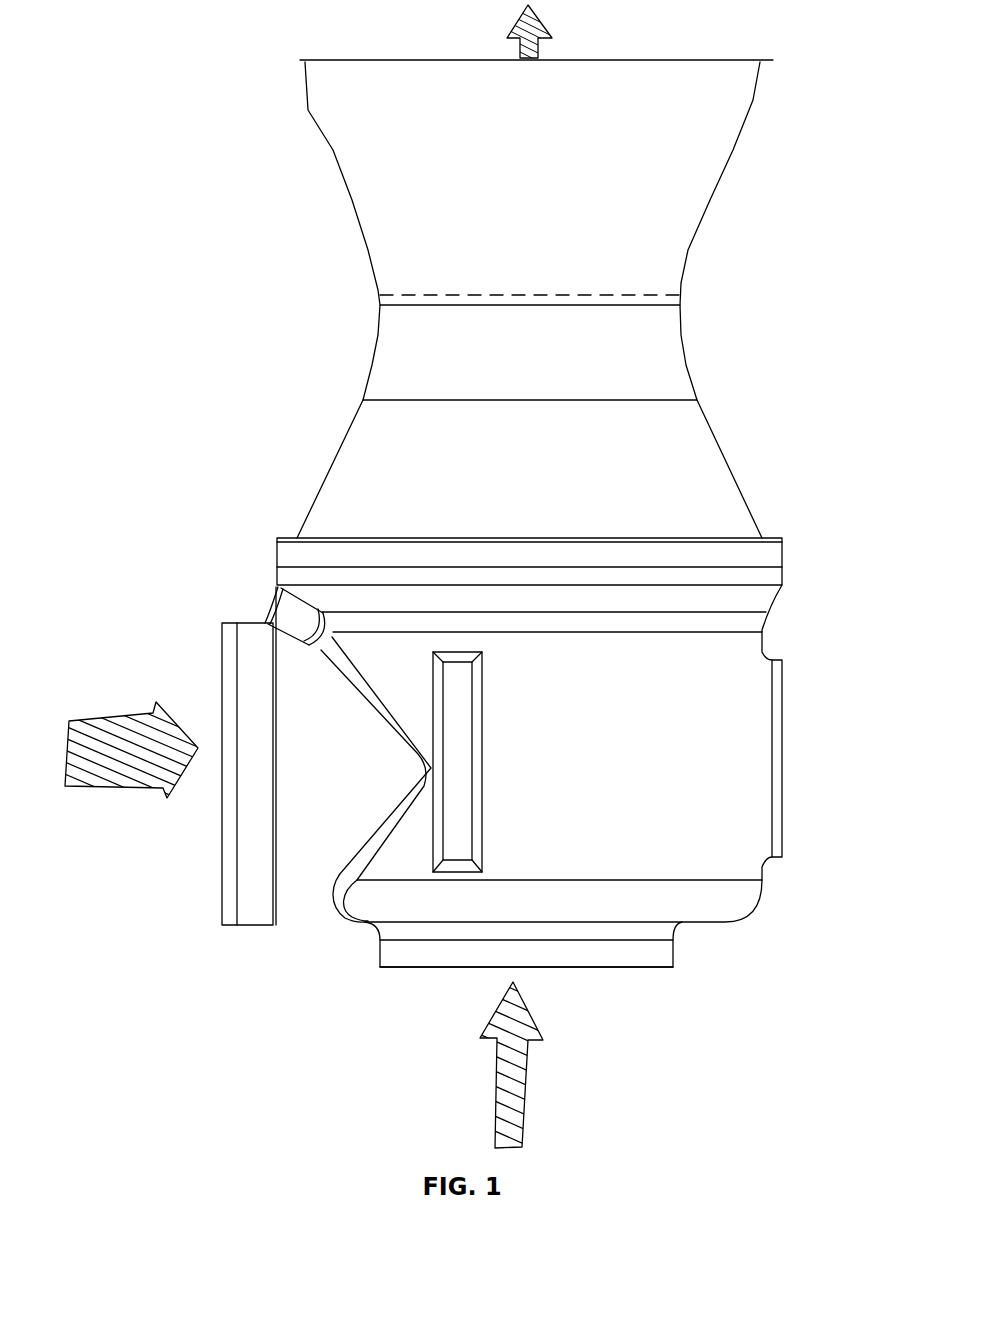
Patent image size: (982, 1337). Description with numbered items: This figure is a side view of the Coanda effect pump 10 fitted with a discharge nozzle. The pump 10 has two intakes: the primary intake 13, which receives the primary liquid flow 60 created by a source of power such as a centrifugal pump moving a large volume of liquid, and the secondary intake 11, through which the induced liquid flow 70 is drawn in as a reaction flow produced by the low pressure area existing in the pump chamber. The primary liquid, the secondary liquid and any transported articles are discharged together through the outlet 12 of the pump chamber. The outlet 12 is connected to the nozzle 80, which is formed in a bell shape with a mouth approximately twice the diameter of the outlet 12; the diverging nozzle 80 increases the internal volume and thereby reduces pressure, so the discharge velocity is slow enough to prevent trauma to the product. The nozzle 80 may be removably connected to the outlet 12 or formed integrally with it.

The Coanda effect pump 10 is at (282, 486).
The secondary intake 11 is at (607, 962).
The outlet 12 is at (613, 295).
The primary intake 13 is at (218, 889).
The primary liquid flow 60 is at (127, 778).
The induced liquid flow 70 is at (518, 1103).
The nozzle 80 is at (308, 113).